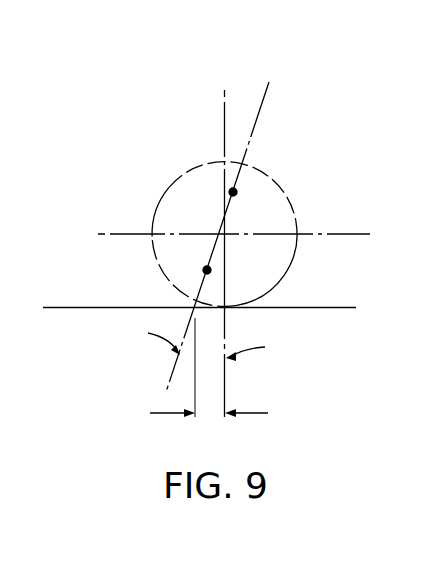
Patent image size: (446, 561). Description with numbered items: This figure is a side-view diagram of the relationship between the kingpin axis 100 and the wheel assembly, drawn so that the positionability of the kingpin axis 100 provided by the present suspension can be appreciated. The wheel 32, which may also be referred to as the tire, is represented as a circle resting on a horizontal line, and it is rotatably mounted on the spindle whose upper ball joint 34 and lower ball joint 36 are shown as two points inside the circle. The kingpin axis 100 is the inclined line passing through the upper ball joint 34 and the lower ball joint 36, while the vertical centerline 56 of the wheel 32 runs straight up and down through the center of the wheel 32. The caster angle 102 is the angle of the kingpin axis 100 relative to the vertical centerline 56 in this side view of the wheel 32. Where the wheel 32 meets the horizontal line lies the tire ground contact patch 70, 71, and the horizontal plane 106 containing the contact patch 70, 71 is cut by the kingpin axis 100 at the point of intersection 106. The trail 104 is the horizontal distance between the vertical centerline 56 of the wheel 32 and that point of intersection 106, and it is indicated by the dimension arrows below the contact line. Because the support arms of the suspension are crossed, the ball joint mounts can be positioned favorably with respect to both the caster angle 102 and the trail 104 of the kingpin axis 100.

The vertical centerline 56 is at (224, 138).
The kingpin axis 100 is at (258, 123).
The wheel 32 is at (279, 287).
The upper ball joint 34 is at (233, 192).
The lower ball joint 36 is at (207, 270).
The tire ground contact patch 70 is at (280, 324).
The tire ground contact patch 71 is at (226, 308).
The point of intersection 106 is at (124, 311).
The caster angle 102 is at (252, 353).
The trail 104 is at (163, 413).